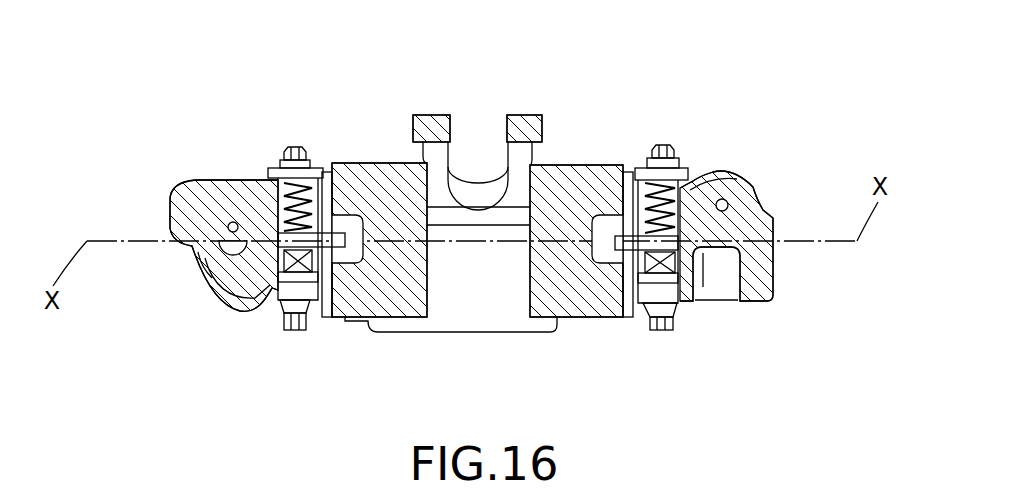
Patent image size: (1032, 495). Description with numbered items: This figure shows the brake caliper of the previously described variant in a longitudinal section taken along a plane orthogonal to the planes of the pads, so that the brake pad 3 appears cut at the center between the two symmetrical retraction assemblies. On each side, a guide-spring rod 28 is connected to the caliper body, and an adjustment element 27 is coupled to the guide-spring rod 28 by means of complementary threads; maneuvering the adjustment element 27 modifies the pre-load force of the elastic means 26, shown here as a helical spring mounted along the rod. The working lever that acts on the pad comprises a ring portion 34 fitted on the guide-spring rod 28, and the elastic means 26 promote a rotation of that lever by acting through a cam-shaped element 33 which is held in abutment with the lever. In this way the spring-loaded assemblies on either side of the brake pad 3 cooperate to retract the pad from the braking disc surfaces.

The brake pad 3 is at (375, 172).
The elastic means 26 is at (272, 190).
The adjustment element 27 is at (287, 147).
The guide-spring rod 28 is at (167, 198).
The cam-shaped element 33 is at (305, 315).
The ring portion 34 is at (213, 303).